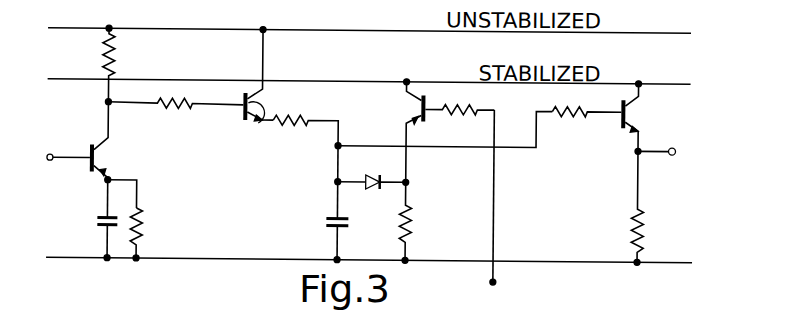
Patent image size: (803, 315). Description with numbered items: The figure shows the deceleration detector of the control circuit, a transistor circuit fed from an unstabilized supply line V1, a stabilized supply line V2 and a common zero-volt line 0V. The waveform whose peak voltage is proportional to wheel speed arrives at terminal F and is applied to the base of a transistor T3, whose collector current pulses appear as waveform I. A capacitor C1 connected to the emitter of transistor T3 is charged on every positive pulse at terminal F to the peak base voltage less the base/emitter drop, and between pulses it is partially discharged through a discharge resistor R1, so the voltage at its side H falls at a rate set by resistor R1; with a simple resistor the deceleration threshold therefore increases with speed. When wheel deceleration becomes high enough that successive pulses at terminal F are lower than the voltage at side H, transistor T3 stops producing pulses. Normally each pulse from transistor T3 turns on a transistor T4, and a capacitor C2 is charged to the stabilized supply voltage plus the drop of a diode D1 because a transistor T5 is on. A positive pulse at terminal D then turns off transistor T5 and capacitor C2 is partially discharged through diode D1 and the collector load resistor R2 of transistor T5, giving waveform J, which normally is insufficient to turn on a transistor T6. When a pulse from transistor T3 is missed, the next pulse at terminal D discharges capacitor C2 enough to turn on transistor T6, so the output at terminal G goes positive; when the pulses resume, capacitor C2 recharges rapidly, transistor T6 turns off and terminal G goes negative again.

The transistor T3 is at (97, 160).
The transistor T4 is at (258, 92).
The transistor T5 is at (418, 103).
The transistor T6 is at (630, 110).
The discharge resistor R1 is at (143, 243).
The collector load resistor R2 is at (412, 207).
The capacitor C1 is at (97, 226).
The capacitor C2 is at (326, 224).
The diode D1 is at (379, 178).
The terminal F is at (52, 157).
The side of capacitor C1 H is at (105, 184).
The waveform point I is at (105, 104).
The waveform point J is at (334, 182).
The terminal D is at (506, 201).
The output terminal G is at (668, 152).
The unstabilized supply line V1 is at (394, 35).
The stabilized supply line V2 is at (393, 84).
The zero-volt line 0V is at (386, 263).